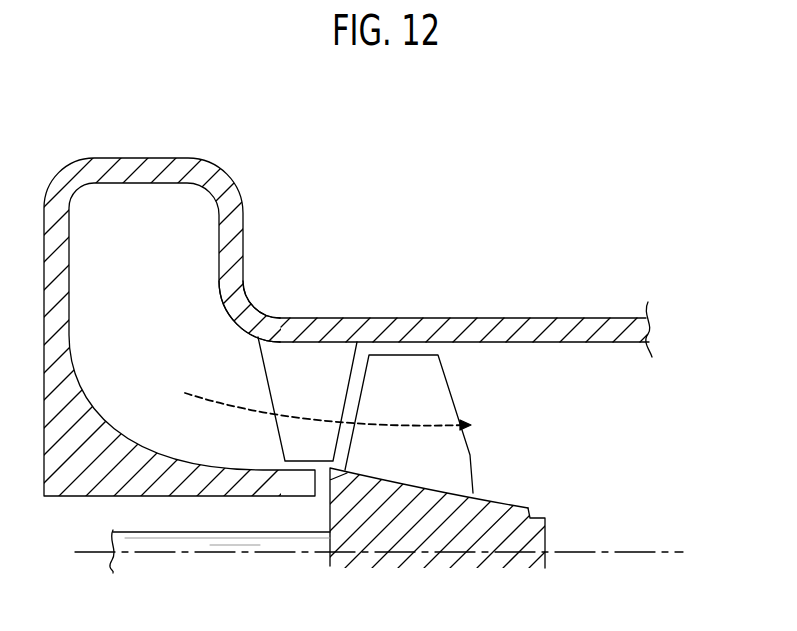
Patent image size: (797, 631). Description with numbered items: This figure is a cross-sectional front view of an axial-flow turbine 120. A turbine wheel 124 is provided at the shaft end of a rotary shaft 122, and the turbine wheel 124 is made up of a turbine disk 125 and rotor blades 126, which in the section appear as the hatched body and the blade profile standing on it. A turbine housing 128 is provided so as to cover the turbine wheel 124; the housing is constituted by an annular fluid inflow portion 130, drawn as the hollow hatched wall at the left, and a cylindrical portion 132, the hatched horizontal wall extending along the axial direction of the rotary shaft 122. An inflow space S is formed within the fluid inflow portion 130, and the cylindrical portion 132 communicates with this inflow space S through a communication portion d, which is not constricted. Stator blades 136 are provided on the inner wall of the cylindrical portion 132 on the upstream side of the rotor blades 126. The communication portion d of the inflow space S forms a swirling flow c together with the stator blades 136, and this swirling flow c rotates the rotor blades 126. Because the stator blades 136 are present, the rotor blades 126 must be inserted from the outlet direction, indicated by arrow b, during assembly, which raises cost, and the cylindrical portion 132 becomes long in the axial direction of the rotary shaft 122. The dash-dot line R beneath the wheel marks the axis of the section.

The axial-flow turbine 120 is at (380, 136).
The rotary shaft 122 is at (148, 532).
The turbine wheel 124 is at (506, 482).
The turbine disk 125 is at (525, 506).
The rotor blades 126 is at (475, 463).
The turbine housing 128 is at (267, 218).
The annular fluid inflow portion 130 is at (123, 157).
The cylindrical portion 132 is at (523, 318).
The stator blades 136 is at (326, 368).
The inflow space S is at (167, 256).
The communication portion d is at (157, 353).
The swirling flow c is at (427, 419).
The outlet direction b is at (675, 450).
The rotational axis R is at (608, 553).